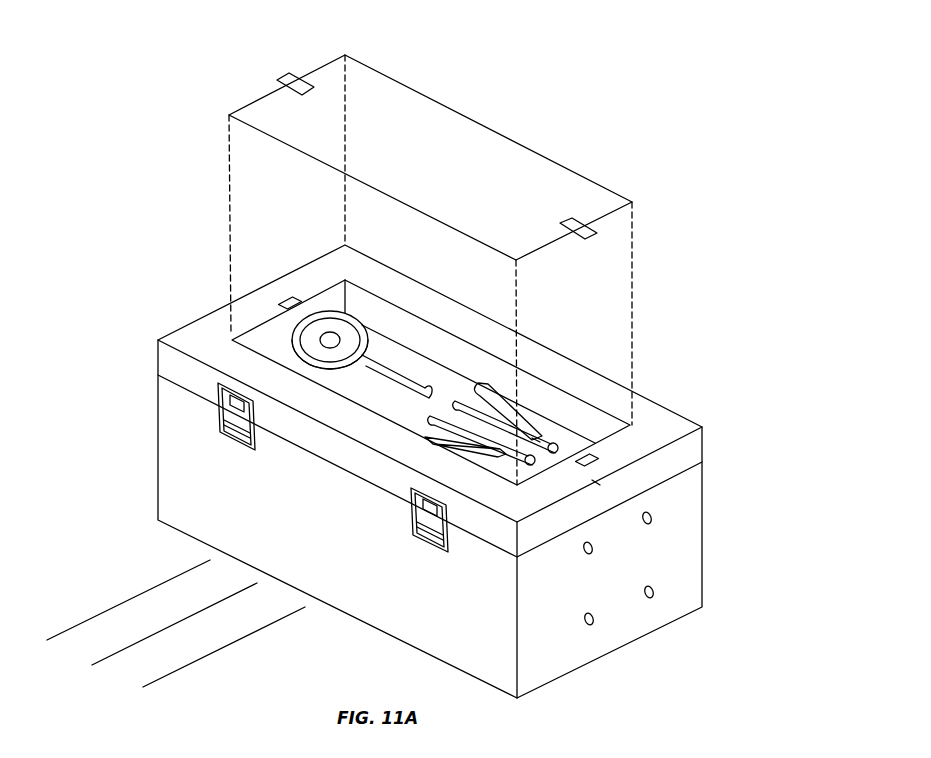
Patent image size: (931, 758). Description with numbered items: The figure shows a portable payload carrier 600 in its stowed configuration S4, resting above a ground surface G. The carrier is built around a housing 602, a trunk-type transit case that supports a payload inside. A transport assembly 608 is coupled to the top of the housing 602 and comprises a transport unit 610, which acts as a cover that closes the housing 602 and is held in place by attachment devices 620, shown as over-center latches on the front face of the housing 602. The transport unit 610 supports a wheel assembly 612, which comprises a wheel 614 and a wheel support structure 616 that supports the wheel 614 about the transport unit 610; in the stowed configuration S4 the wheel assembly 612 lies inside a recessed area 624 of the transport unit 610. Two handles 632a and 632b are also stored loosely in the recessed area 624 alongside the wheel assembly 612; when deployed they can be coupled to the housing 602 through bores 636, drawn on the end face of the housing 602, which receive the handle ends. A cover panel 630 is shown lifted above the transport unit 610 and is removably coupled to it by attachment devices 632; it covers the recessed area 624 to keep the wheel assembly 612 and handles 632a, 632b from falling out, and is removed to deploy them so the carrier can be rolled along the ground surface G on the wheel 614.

The portable payload carrier 600 is at (130, 173).
The stowed configuration S4 is at (144, 265).
The housing 602 is at (172, 443).
The transport assembly 608 is at (316, 244).
The transport unit 610 is at (172, 360).
The wheel assembly 612 is at (375, 332).
The wheel 614 is at (323, 352).
The wheel support structure 616 is at (403, 383).
The attachment devices 620 is at (226, 447).
The recessed area 624 is at (444, 370).
The cover panel 630 is at (512, 150).
The attachment devices 632 is at (278, 78).
The handle 632a is at (537, 440).
The handle 632b is at (597, 484).
The bores 636 is at (654, 592).
The ground surface G is at (141, 593).